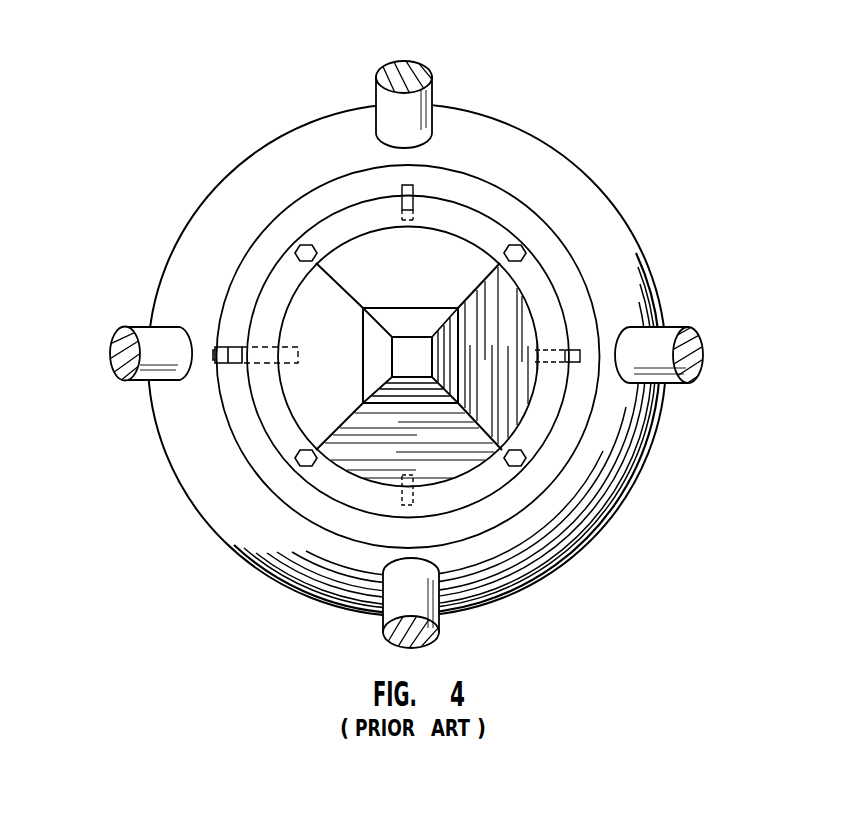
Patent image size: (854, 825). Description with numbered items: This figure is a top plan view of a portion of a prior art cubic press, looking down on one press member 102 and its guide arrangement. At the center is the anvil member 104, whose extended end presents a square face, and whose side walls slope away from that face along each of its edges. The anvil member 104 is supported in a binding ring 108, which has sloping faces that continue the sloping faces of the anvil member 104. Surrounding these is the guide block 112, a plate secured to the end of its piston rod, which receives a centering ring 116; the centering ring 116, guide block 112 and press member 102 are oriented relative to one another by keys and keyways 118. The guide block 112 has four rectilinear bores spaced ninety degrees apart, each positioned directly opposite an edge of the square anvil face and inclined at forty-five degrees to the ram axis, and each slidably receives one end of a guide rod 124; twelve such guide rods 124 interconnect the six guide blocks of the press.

The press member 102 is at (357, 270).
The anvil member 104 is at (415, 318).
The binding ring 108 is at (420, 347).
The guide block 112 is at (162, 270).
The centering ring 116 is at (498, 233).
The keys and keyways 118 is at (230, 337).
The guide rod 124 is at (393, 100).